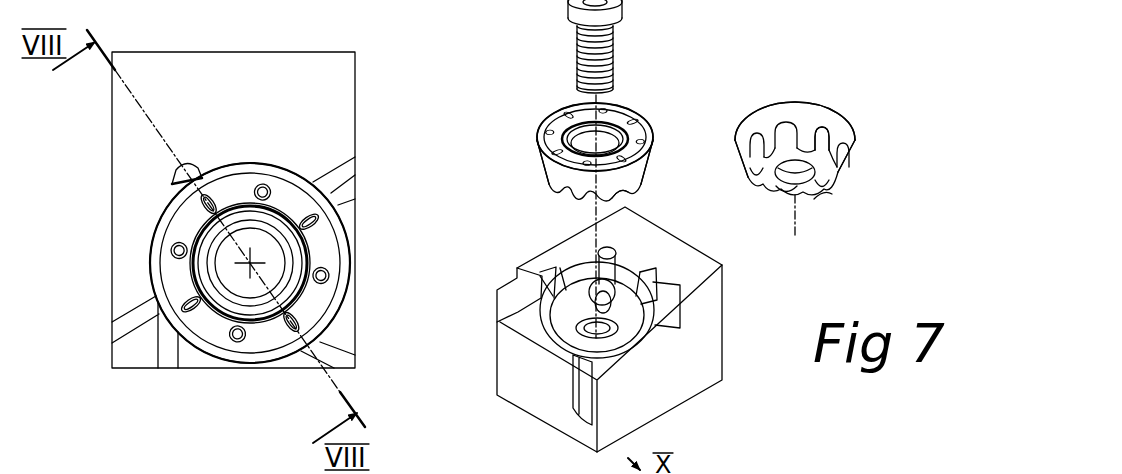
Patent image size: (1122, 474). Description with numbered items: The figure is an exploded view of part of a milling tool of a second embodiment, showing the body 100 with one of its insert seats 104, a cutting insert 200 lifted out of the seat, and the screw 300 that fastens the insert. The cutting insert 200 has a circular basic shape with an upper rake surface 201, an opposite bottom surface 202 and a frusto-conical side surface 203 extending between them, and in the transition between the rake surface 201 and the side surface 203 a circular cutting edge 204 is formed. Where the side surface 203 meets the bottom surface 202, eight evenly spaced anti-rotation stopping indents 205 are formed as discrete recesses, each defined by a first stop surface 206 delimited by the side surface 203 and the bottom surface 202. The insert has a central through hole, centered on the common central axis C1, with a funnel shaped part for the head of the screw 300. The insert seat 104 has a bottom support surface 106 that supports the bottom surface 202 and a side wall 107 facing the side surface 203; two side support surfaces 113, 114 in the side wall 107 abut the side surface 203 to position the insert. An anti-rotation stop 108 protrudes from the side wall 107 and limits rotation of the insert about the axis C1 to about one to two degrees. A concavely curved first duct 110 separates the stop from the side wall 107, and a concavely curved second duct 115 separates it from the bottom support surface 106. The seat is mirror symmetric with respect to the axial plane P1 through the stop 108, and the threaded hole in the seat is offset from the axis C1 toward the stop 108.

The body 100 is at (330, 112).
The cutting insert 200 is at (337, 298).
The upper rake surface 201 is at (328, 265).
The bottom surface 202 is at (808, 190).
The side surface 203 is at (548, 167).
The circular cutting edge 204 is at (322, 338).
The anti-rotation stopping indent 205 is at (624, 190).
The first stop surface 206 is at (822, 140).
The screw 300 is at (558, 54).
The insert seat 104 is at (563, 333).
The bottom support surface 106 is at (622, 343).
The side wall 107 is at (622, 270).
The anti-rotation stop 108 is at (604, 303).
The first duct 110 is at (600, 281).
The side support surface 113 is at (558, 277).
The side support surface 114 is at (648, 293).
The second duct 115 is at (600, 312).
The common central axis C1 is at (252, 266).
The axial plane P1 is at (337, 390).